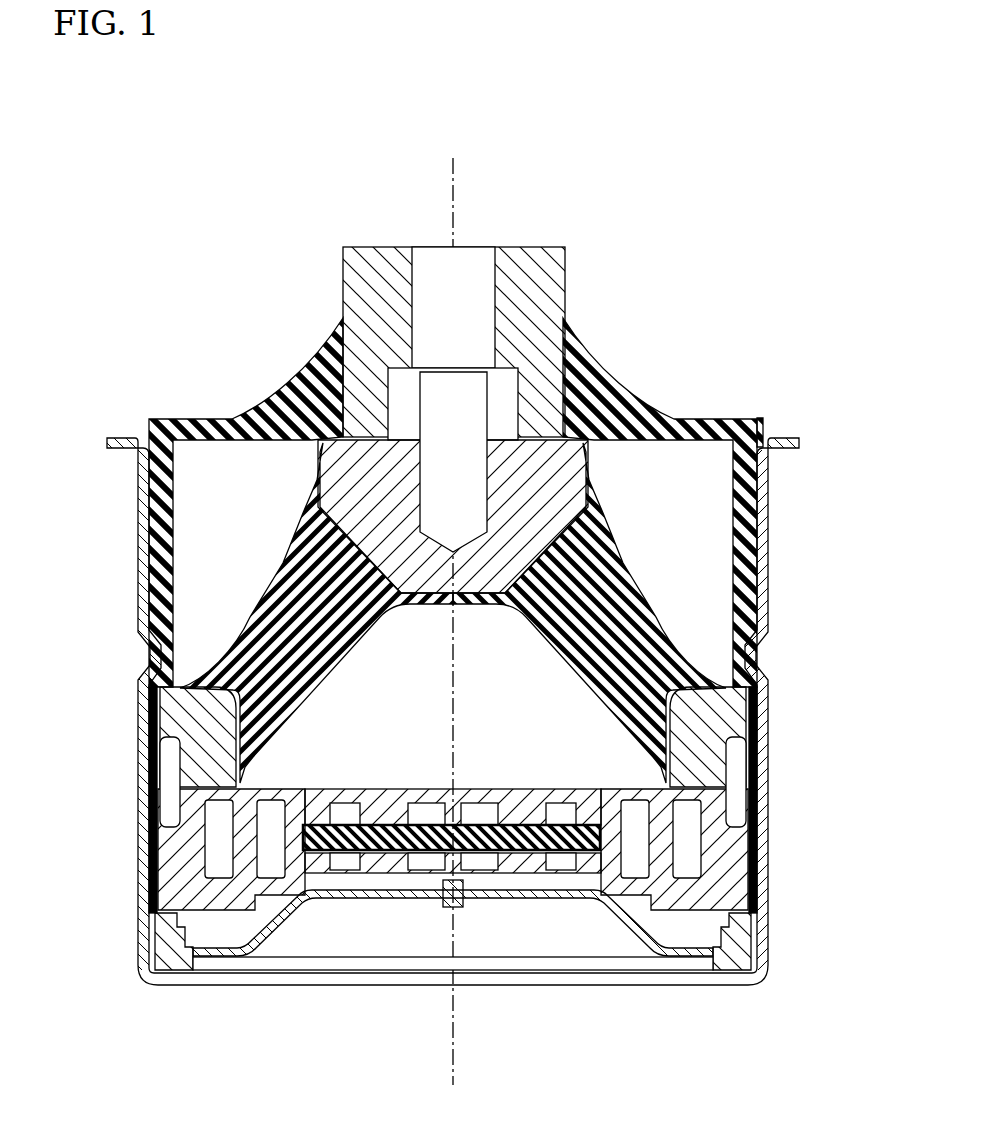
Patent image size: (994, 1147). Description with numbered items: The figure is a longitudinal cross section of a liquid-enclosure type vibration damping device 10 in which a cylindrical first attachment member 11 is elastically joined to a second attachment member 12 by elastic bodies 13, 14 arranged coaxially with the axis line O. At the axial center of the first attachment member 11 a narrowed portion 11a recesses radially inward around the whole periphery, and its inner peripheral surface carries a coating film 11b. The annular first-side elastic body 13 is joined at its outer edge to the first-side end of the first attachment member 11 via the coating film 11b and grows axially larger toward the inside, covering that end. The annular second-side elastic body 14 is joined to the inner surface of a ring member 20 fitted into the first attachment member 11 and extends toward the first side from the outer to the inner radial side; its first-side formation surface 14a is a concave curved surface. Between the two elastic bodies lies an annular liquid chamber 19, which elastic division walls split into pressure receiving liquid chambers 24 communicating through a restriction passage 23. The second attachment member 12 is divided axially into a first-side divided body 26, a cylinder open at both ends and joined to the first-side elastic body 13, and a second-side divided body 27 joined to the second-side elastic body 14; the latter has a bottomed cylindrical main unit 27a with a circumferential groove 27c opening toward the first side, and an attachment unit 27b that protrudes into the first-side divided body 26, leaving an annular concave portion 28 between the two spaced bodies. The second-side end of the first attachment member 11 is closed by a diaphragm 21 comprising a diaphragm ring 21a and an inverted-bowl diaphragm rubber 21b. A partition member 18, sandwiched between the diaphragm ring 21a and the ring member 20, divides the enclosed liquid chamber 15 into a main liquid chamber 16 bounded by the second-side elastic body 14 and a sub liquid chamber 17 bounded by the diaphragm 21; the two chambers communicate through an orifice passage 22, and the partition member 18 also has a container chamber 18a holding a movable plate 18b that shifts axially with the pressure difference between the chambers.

The vibration damping device 10 is at (745, 152).
The first attachment member 11 is at (447, 721).
The narrowed portion 11a is at (757, 666).
The coating film 11b is at (152, 880).
The second attachment member 12 is at (441, 370).
The first-side elastic body 13 is at (682, 418).
The second-side elastic body 14 is at (444, 613).
The formation surface 14a is at (232, 632).
The enclosed liquid chamber 15 is at (385, 803).
The main liquid chamber 16 is at (283, 756).
The sub liquid chamber 17 is at (227, 920).
The partition member 18 is at (524, 910).
The container chamber 18a is at (350, 845).
The movable plate 18b is at (424, 840).
The liquid chamber 19 is at (338, 520).
The ring member 20 is at (737, 720).
The diaphragm 21 is at (453, 1001).
The diaphragm ring 21a is at (733, 963).
The diaphragm rubber 21b is at (677, 950).
The orifice passage 22 is at (637, 860).
The restriction passage 23 is at (740, 800).
The pressure receiving liquid chamber 24 is at (653, 512).
The first-side divided body 26 is at (372, 262).
The second-side divided body 27 is at (441, 390).
The main unit 27a is at (325, 482).
The attachment unit 27b is at (396, 397).
The circumferential groove 27c is at (583, 450).
The annular concave portion 28 is at (538, 430).
The axis line O is at (457, 186).